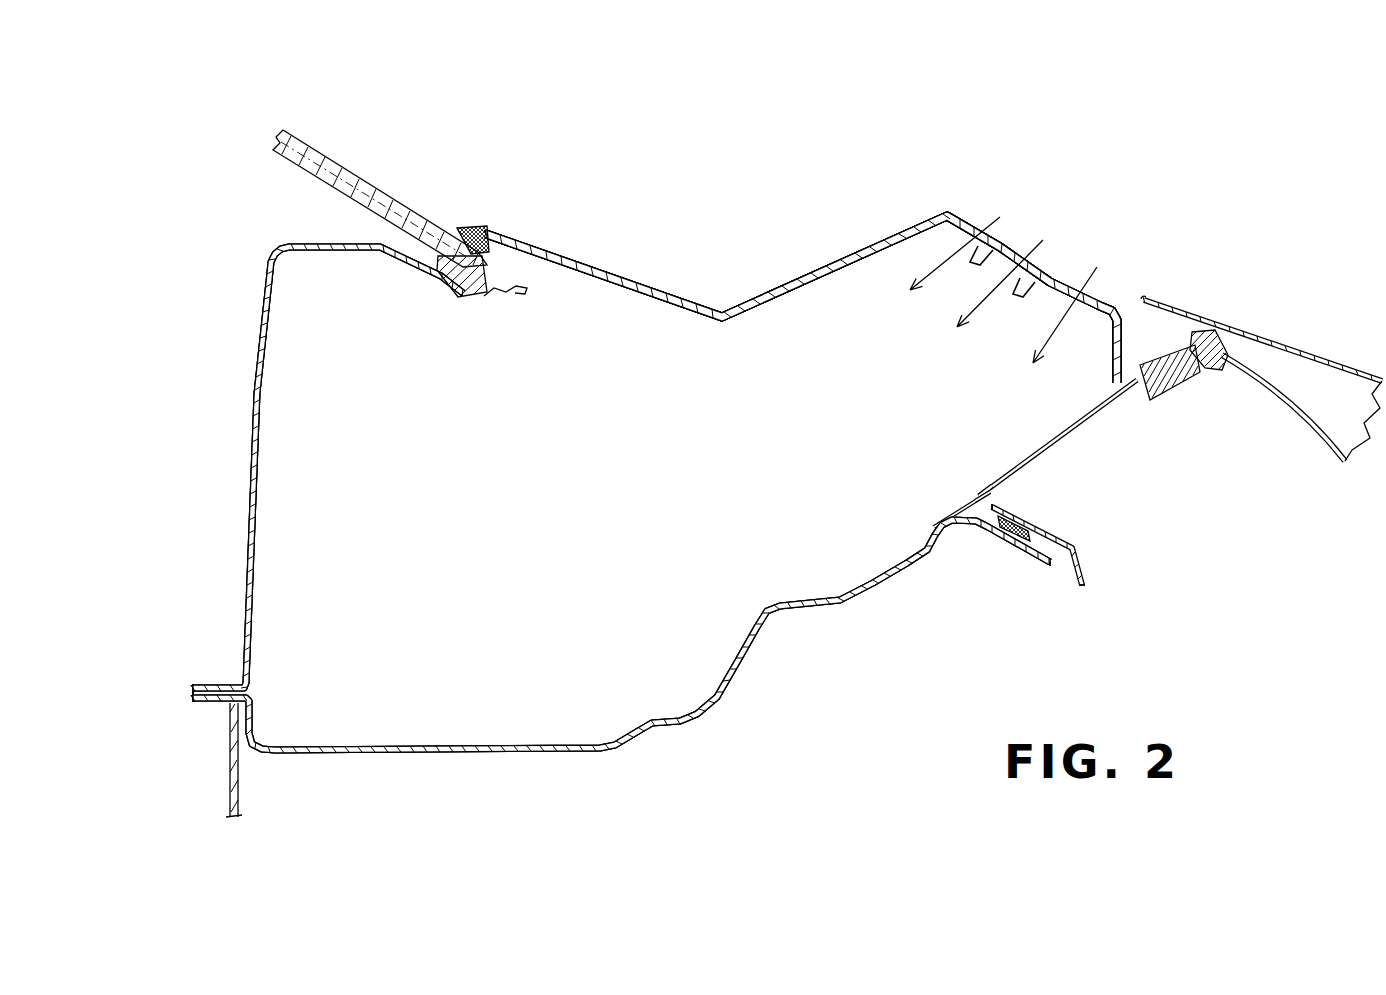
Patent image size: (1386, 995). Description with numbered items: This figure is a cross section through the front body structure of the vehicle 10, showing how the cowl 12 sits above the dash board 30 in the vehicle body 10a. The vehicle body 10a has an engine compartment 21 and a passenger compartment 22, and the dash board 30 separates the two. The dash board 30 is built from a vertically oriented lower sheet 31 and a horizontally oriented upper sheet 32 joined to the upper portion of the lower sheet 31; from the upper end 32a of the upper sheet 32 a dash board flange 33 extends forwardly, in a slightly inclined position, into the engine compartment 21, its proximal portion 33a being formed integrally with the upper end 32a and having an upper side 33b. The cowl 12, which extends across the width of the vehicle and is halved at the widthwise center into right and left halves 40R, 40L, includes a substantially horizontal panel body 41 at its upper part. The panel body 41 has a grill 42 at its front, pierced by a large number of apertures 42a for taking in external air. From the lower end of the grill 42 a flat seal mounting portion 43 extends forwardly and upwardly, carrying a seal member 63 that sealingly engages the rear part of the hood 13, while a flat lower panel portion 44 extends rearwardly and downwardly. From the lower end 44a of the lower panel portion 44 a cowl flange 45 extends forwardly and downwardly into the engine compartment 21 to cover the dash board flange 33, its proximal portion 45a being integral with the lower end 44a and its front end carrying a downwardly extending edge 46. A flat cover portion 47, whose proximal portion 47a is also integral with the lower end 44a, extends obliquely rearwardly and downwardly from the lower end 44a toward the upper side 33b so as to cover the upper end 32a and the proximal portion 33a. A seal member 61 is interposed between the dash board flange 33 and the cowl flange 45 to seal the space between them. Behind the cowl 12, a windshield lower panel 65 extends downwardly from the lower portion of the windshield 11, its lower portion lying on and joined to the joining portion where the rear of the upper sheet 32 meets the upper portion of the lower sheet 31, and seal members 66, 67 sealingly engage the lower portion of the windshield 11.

The vehicle 10 is at (1271, 129).
The vehicle body 10a is at (255, 234).
The windshield 11 is at (335, 158).
The cowl 12 is at (655, 280).
The left half of the cowl 40L is at (803, 298).
The right half of the cowl 40R is at (803, 298).
The hood 13 is at (1319, 360).
The engine compartment 21 is at (400, 830).
The passenger compartment 22 is at (167, 676).
The dash board 30 is at (729, 743).
The lower sheet 31 is at (235, 772).
The upper sheet 32 is at (602, 765).
The upper end of the upper sheet 32a is at (924, 536).
The dash board flange 33 is at (1037, 558).
The proximal portion of the dash board flange 33a is at (972, 524).
The upper side of the proximal portion 33b is at (960, 503).
The panel body 41 is at (690, 295).
The grill 42 is at (982, 222).
The apertures 42a is at (1100, 295).
The seal mounting portion 43 is at (1140, 397).
The lower panel portion 44 is at (1090, 433).
The lower end of the lower panel portion 44a is at (992, 492).
The cowl flange 45 is at (1068, 538).
The proximal portion of the cowl flange 45a is at (998, 504).
The edge 46 is at (1087, 574).
The cover portion 47 is at (940, 517).
The proximal portion of the cover portion 47a is at (950, 508).
The seal member 61 is at (1003, 538).
The seal member 63 is at (1220, 378).
The windshield lower panel 65 is at (257, 347).
The seal member 66 is at (478, 232).
The seal member 67 is at (460, 297).